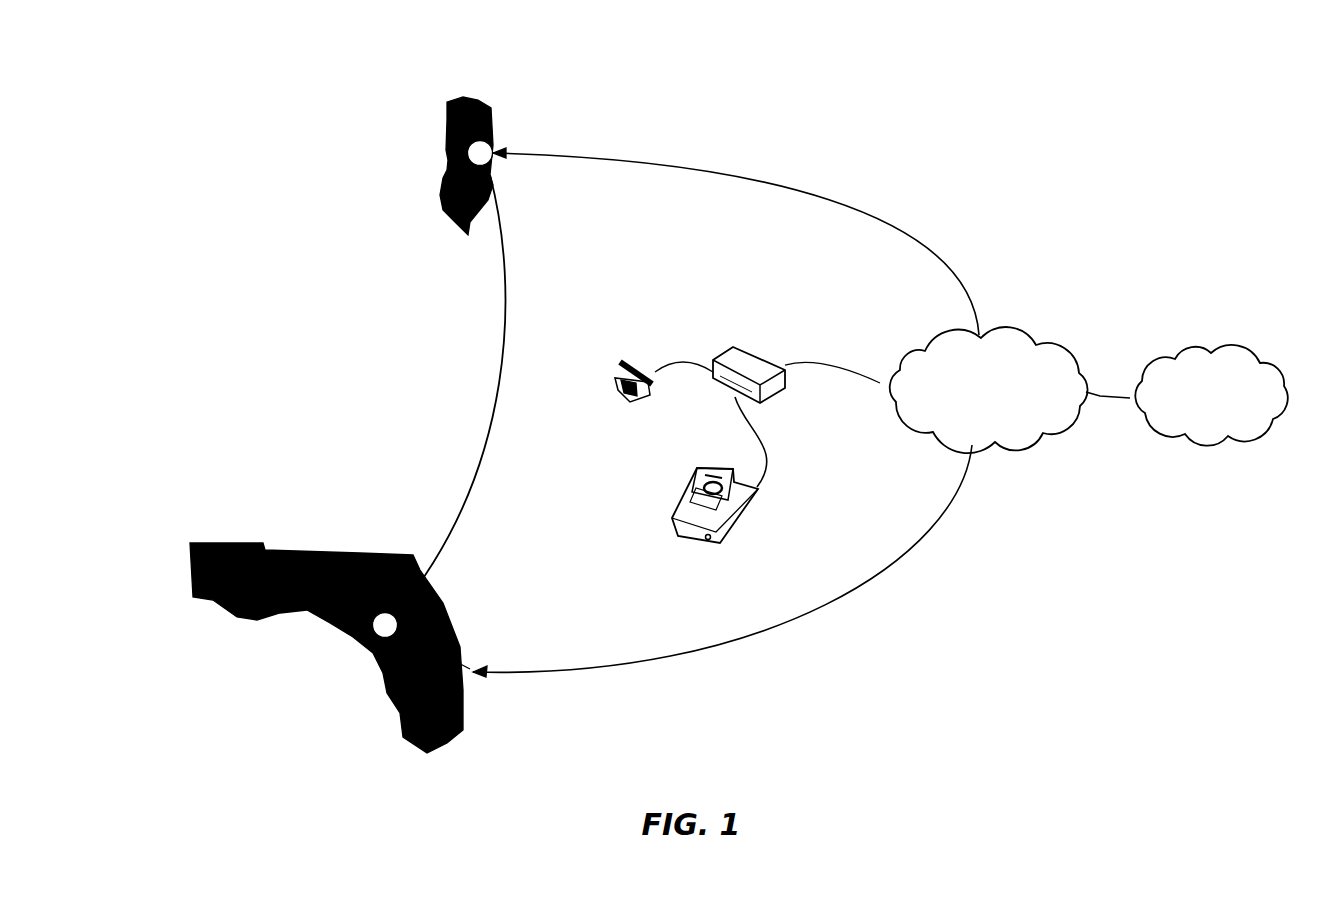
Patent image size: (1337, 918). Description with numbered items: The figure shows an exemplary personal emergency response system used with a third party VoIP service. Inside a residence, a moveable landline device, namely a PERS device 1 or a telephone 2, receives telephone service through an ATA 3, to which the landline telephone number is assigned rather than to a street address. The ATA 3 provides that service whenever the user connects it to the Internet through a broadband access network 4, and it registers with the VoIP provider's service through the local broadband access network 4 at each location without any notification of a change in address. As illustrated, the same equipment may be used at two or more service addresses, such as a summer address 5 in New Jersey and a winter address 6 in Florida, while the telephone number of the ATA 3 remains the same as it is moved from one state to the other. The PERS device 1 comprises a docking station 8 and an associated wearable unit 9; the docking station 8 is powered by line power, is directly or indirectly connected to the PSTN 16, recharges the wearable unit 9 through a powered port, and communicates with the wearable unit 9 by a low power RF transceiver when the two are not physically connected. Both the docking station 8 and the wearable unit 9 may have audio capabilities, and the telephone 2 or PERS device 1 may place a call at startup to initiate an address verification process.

The PERS device 1 is at (683, 490).
The telephone 2 is at (640, 368).
The ATA 3 is at (757, 357).
The broadband access network 4 is at (989, 390).
The summer address 5 is at (484, 151).
The winter address 6 is at (385, 623).
The docking station 8 is at (709, 538).
The wearable unit 9 is at (705, 470).
The PSTN 16 is at (1211, 395).